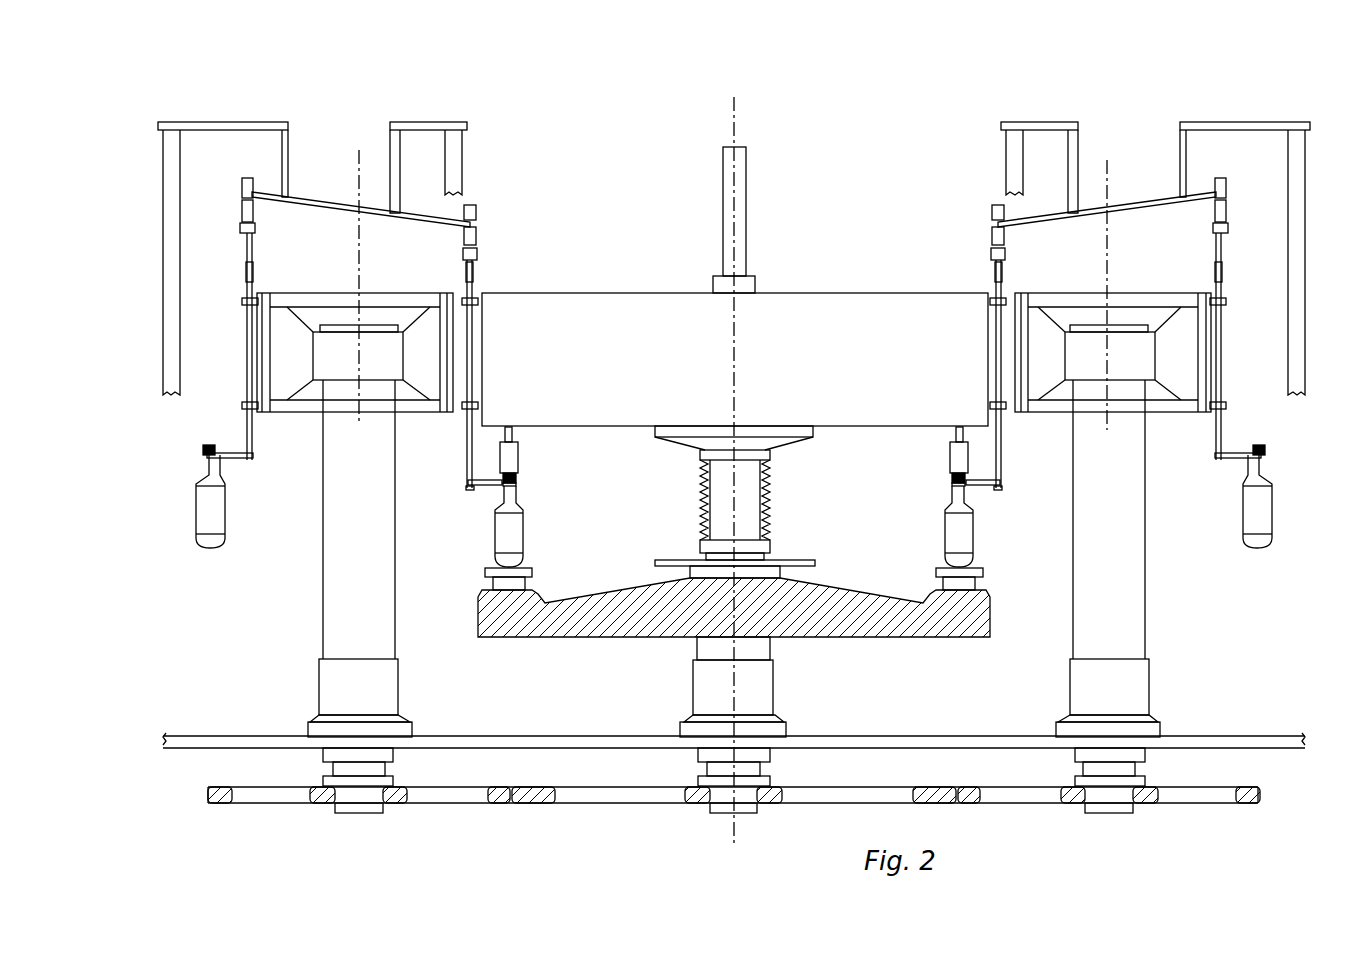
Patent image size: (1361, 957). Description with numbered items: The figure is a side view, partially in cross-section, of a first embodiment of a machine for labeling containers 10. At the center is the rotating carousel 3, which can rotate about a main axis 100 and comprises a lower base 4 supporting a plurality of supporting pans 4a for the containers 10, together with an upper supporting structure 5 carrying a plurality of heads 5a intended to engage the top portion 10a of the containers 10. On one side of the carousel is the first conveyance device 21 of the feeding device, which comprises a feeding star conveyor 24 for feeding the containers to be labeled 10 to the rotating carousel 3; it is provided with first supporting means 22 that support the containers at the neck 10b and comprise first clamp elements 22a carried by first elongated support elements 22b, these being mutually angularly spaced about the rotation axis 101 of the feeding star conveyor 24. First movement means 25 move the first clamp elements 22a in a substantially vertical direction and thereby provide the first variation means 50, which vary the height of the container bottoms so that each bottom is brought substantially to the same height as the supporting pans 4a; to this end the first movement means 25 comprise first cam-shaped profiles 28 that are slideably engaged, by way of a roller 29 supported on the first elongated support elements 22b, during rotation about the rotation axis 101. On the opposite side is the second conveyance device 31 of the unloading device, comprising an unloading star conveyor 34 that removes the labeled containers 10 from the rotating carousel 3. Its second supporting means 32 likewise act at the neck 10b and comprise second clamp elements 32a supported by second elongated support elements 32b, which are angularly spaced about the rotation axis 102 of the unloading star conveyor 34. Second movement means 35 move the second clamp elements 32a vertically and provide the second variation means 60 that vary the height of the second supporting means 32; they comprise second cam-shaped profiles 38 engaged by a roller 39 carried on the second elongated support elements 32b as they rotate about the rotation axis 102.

The rotating carousel 3 is at (602, 642).
The lower base 4 is at (893, 617).
The supporting pans 4a is at (508, 582).
The upper supporting structure 5 is at (798, 290).
The heads 5a is at (510, 432).
The containers 10 is at (193, 510).
The top portion 10a is at (516, 478).
The neck 10b is at (207, 455).
The first conveyance device 21 is at (1268, 118).
The first supporting means 22 is at (1212, 440).
The first clamp elements 22a is at (975, 488).
The first elongated support elements 22b is at (997, 272).
The feeding star conveyor 24 is at (1233, 333).
The first movement means 25 is at (1200, 185).
The first cam-shaped profiles 28 is at (1091, 216).
The roller 29 is at (1000, 210).
The second conveyance device 31 is at (512, 158).
The second supporting means 32 is at (257, 438).
The second clamp elements 32a is at (233, 458).
The second elongated support elements 32b is at (250, 272).
The unloading star conveyor 34 is at (235, 333).
The second movement means 35 is at (268, 188).
The second cam-shaped profiles 38 is at (377, 216).
The roller 39 is at (247, 188).
The first variation means 50 is at (1140, 198).
The second variation means 60 is at (310, 198).
The main axis 100 is at (734, 112).
The rotation axis 101 is at (1107, 160).
The rotation axis 102 is at (359, 155).